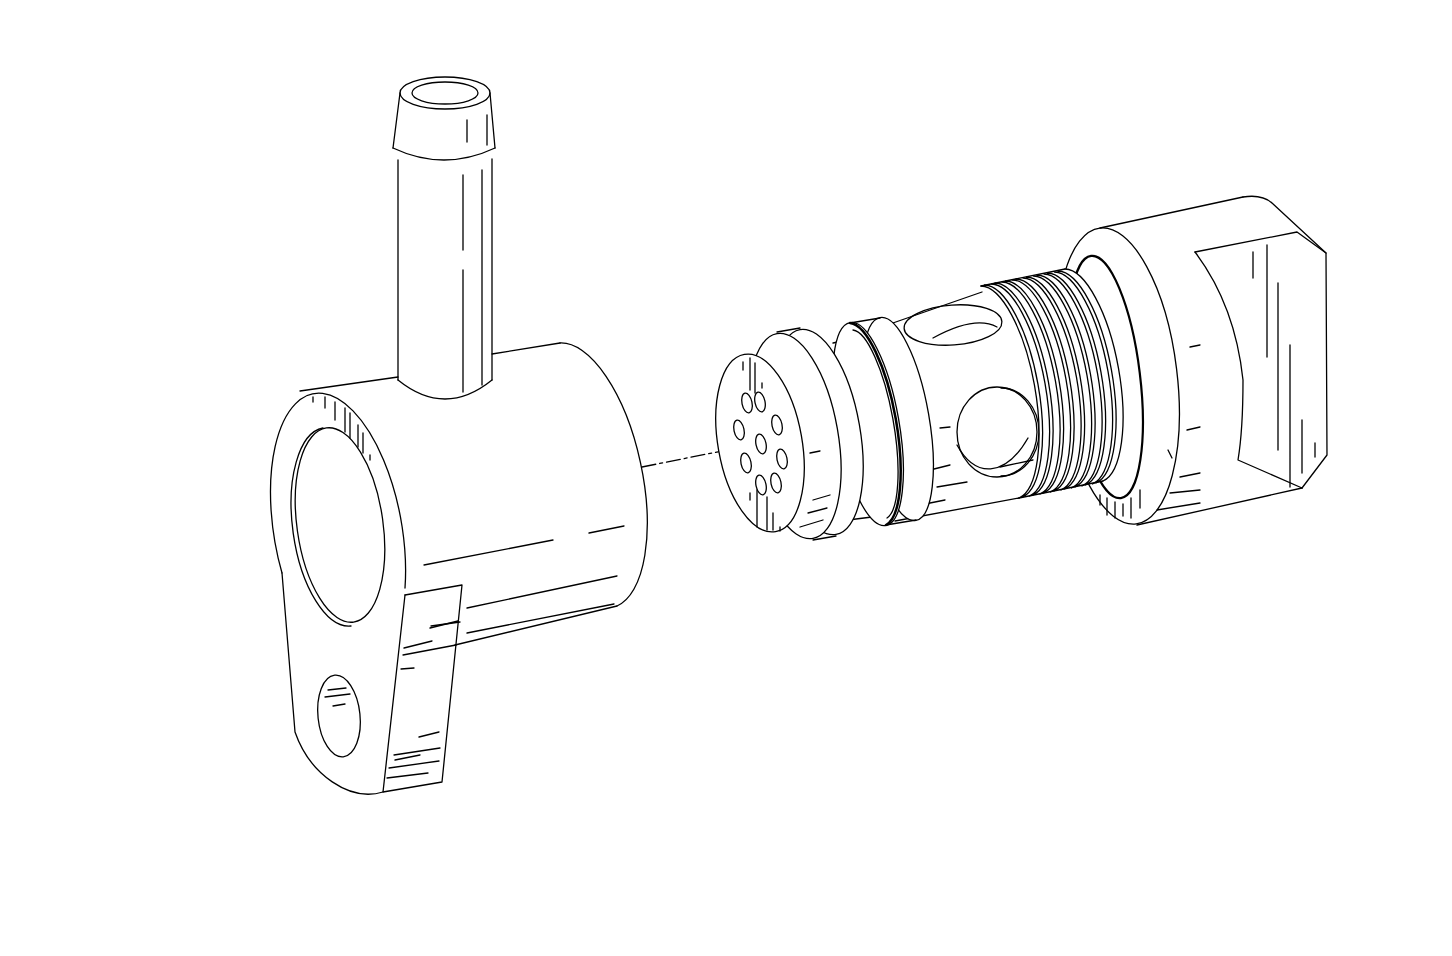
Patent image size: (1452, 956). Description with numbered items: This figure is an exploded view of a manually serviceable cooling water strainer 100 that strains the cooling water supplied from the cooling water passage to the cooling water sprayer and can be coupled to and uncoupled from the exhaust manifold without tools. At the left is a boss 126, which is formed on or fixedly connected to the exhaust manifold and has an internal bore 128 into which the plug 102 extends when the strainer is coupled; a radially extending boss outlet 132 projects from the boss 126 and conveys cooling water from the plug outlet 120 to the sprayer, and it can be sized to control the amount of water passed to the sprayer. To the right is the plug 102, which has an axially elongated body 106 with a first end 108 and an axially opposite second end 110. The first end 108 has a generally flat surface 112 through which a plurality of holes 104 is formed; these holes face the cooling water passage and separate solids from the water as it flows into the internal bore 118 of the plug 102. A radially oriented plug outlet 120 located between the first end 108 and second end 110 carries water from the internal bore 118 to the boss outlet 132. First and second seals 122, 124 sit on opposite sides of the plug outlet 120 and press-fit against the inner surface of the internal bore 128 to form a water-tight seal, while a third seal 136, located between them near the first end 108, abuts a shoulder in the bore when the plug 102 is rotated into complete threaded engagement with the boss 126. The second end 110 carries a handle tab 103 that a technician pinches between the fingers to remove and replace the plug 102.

The manually serviceable cooling water strainer 100 is at (1183, 143).
The plug 102 is at (1175, 235).
The handle tab 103 is at (1292, 253).
The plurality of holes 104 is at (742, 378).
The axially elongated body 106 is at (1005, 495).
The first end 108 is at (745, 568).
The second end 110 is at (1360, 325).
The generally flat surface 112 is at (728, 425).
The internal bore 118 is at (994, 446).
The plug outlet 120 is at (956, 326).
The first seal 122 is at (1085, 266).
The second seal 124 is at (792, 335).
The boss 126 is at (306, 289).
The internal bore 128 is at (333, 528).
The boss outlet 132 is at (408, 183).
The third seal 136 is at (862, 322).